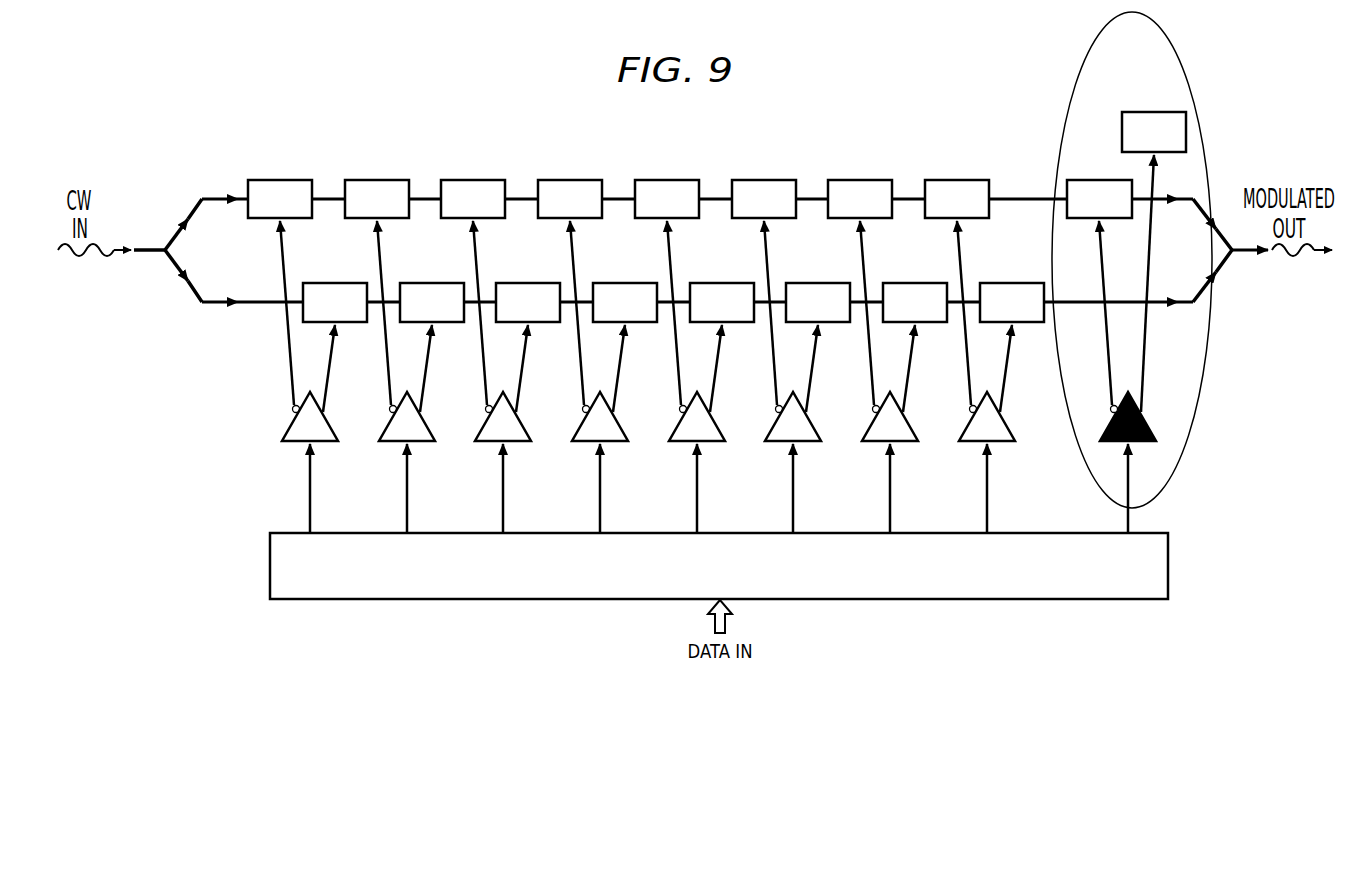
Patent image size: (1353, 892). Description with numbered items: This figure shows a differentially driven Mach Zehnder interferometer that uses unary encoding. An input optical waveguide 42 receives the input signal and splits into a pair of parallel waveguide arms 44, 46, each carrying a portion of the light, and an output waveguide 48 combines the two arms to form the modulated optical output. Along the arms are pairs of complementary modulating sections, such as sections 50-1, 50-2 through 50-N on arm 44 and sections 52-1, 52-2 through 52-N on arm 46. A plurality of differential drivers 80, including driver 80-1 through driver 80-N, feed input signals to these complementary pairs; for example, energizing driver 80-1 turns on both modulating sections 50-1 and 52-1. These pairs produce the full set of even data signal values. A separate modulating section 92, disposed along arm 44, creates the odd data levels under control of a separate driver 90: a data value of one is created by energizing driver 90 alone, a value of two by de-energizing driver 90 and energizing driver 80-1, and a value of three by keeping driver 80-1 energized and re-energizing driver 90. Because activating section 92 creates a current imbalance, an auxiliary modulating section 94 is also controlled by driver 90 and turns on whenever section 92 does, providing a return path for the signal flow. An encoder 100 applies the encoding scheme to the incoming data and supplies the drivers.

The input optical waveguide 42 is at (143, 249).
The waveguide arm 44 is at (213, 196).
The waveguide arm 46 is at (254, 299).
The output waveguide 48 is at (1236, 253).
The modulating section 50-1 is at (258, 212).
The modulating section 50-2 is at (355, 212).
The modulating section 50-N is at (935, 212).
The modulating section 52-1 is at (313, 315).
The modulating section 52-2 is at (410, 315).
The modulating section 52-N is at (990, 315).
The differential drivers 80 is at (600, 377).
The differential driver 80-1 is at (303, 424).
The differential driver 80-N is at (980, 432).
The driver 90 is at (1145, 425).
The modulating section 92 is at (1086, 212).
The auxiliary modulating section 94 is at (1141, 145).
The encoder 100 is at (1168, 568).